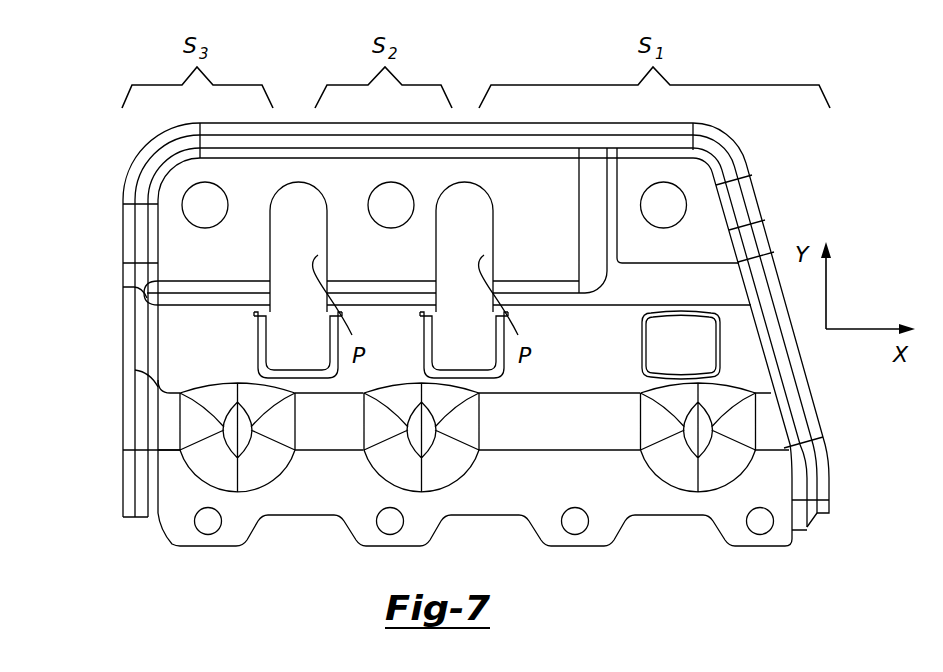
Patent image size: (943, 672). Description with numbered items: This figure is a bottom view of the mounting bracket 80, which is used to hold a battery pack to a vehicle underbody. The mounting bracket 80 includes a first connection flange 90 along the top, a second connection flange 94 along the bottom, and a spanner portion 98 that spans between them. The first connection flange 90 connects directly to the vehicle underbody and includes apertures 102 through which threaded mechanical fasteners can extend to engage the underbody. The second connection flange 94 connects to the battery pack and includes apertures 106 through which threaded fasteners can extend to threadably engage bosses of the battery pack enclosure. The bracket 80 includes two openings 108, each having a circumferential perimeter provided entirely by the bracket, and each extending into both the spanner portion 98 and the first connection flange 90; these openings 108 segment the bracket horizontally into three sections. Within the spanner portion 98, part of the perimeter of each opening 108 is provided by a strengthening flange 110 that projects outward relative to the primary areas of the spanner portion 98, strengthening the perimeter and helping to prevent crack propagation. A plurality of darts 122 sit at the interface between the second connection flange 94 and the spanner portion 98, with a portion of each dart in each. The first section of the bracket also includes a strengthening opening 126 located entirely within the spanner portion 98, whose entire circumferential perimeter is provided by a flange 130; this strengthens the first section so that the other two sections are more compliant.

The mounting bracket 80 is at (113, 43).
The first connection flange 90 is at (170, 235).
The second connection flange 94 is at (231, 535).
The spanner portion 98 is at (173, 345).
The apertures 102 is at (205, 236).
The apertures 106 is at (207, 536).
The openings 108 is at (327, 192).
The strengthening flange 110 is at (257, 357).
The darts 122 is at (262, 463).
The strengthening opening 126 is at (641, 350).
The flange 130 is at (683, 312).